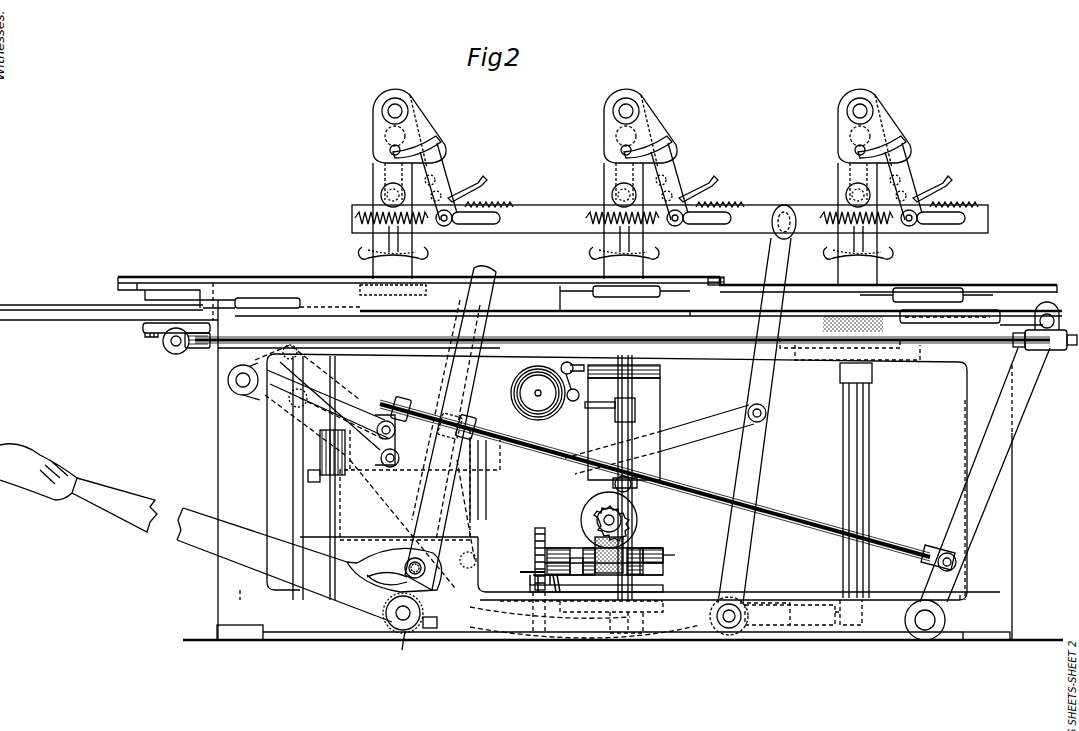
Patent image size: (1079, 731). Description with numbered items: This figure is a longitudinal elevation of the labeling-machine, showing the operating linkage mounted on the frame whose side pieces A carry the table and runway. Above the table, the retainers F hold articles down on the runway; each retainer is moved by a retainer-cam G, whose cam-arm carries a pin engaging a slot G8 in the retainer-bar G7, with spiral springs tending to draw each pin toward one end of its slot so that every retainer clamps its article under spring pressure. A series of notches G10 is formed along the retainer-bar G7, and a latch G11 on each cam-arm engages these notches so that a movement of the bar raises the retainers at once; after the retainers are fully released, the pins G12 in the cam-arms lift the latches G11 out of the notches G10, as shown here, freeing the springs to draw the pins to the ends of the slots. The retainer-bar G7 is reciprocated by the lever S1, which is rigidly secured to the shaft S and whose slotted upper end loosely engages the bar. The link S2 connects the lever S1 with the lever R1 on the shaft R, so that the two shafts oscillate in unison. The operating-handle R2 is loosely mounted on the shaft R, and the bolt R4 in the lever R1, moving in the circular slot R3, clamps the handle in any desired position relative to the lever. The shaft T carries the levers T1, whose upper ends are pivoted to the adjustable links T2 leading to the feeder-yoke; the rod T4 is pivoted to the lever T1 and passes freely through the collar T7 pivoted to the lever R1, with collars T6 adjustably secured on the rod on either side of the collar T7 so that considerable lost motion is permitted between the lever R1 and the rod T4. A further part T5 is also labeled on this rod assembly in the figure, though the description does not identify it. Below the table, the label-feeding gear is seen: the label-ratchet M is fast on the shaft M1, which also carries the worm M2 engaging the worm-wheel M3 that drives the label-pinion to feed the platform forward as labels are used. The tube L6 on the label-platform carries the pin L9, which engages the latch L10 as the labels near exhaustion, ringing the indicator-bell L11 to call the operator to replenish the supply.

The retainer-cam G is at (428, 128).
The retainer-bar G7 is at (670, 219).
The slot in retainer-bar G8 is at (490, 226).
The notch G10 is at (506, 205).
The latch G11 is at (480, 185).
The pin in cam-arm G12 is at (436, 160).
The retainer F is at (424, 254).
The shaft S is at (731, 628).
The lever S' S1 is at (736, 525).
The link S2 is at (786, 248).
The shaft T is at (923, 640).
The lever T' T1 is at (985, 475).
The link T2 is at (986, 345).
The rod T4 is at (800, 517).
The block T5 is at (472, 423).
The collar T6 is at (398, 402).
The collar T7 is at (440, 414).
The shaft R is at (410, 628).
The lever R' R1 is at (456, 372).
The operating-handle R2 is at (284, 565).
The circular slot R3 is at (366, 560).
The bolt R4 is at (403, 576).
The tube L6 is at (645, 407).
The pin L9 is at (590, 410).
The latch L10 is at (587, 373).
The indicator-bell L11 is at (522, 407).
The label-ratchet M is at (535, 536).
The shaft M' M1 is at (580, 552).
The worm M2 is at (640, 558).
The worm-wheel M3 is at (590, 508).
The side piece A is at (313, 628).